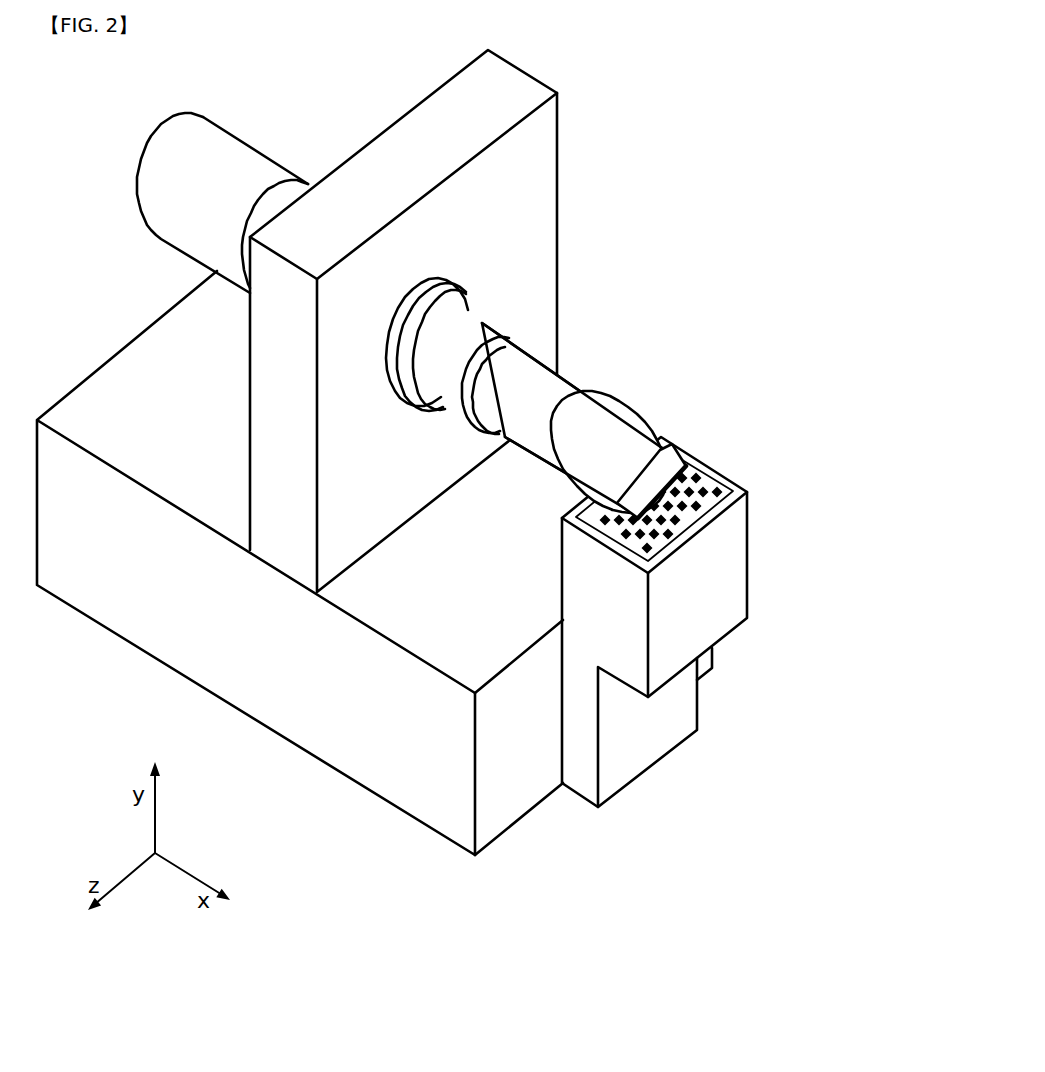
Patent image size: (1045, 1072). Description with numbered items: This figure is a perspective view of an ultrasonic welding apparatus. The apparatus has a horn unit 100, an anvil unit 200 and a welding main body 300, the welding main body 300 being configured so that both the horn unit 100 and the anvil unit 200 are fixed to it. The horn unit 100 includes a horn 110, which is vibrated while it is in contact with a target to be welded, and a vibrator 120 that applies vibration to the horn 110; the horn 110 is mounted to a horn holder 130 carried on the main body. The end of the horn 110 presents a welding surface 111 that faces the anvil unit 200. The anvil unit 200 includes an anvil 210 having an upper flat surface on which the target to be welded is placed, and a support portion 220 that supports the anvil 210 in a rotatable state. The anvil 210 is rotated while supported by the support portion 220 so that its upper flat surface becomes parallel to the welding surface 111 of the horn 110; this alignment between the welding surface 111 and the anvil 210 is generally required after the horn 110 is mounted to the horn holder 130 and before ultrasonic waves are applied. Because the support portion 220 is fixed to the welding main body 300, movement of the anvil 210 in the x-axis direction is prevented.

The horn unit 100 is at (458, 321).
The horn 110 is at (617, 411).
The welding surface 111 is at (663, 477).
The vibrator 120 is at (399, 273).
The horn holder 130 is at (557, 187).
The anvil unit 200 is at (750, 622).
The anvil 210 is at (847, 590).
The support portion 220 is at (735, 602).
The welding main body 300 is at (178, 638).